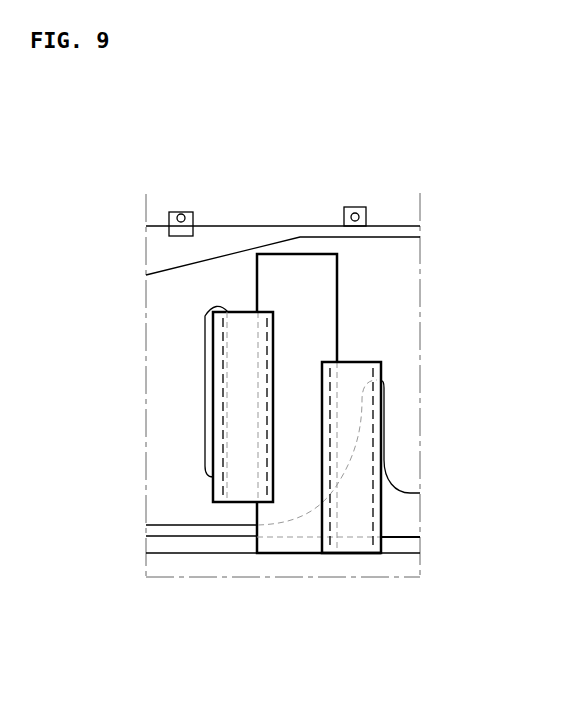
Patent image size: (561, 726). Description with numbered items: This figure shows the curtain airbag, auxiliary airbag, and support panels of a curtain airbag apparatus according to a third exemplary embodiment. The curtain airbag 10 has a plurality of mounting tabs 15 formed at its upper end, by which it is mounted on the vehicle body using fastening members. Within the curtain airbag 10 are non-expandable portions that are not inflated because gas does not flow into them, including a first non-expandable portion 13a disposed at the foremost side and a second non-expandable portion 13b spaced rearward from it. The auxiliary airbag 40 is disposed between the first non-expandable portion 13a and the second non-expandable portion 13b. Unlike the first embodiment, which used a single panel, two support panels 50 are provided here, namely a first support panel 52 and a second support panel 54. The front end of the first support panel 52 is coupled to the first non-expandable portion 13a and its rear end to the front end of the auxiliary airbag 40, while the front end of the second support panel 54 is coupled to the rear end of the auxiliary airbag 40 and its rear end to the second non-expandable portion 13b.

The curtain airbag 10 is at (388, 213).
The first non-expandable portion 13a is at (203, 372).
The second non-expandable portion 13b is at (384, 403).
The mounting tabs 15 is at (181, 213).
The auxiliary airbag 40 is at (307, 280).
The support panels 50 is at (297, 494).
The first support panel 52 is at (240, 487).
The second support panel 54 is at (357, 518).